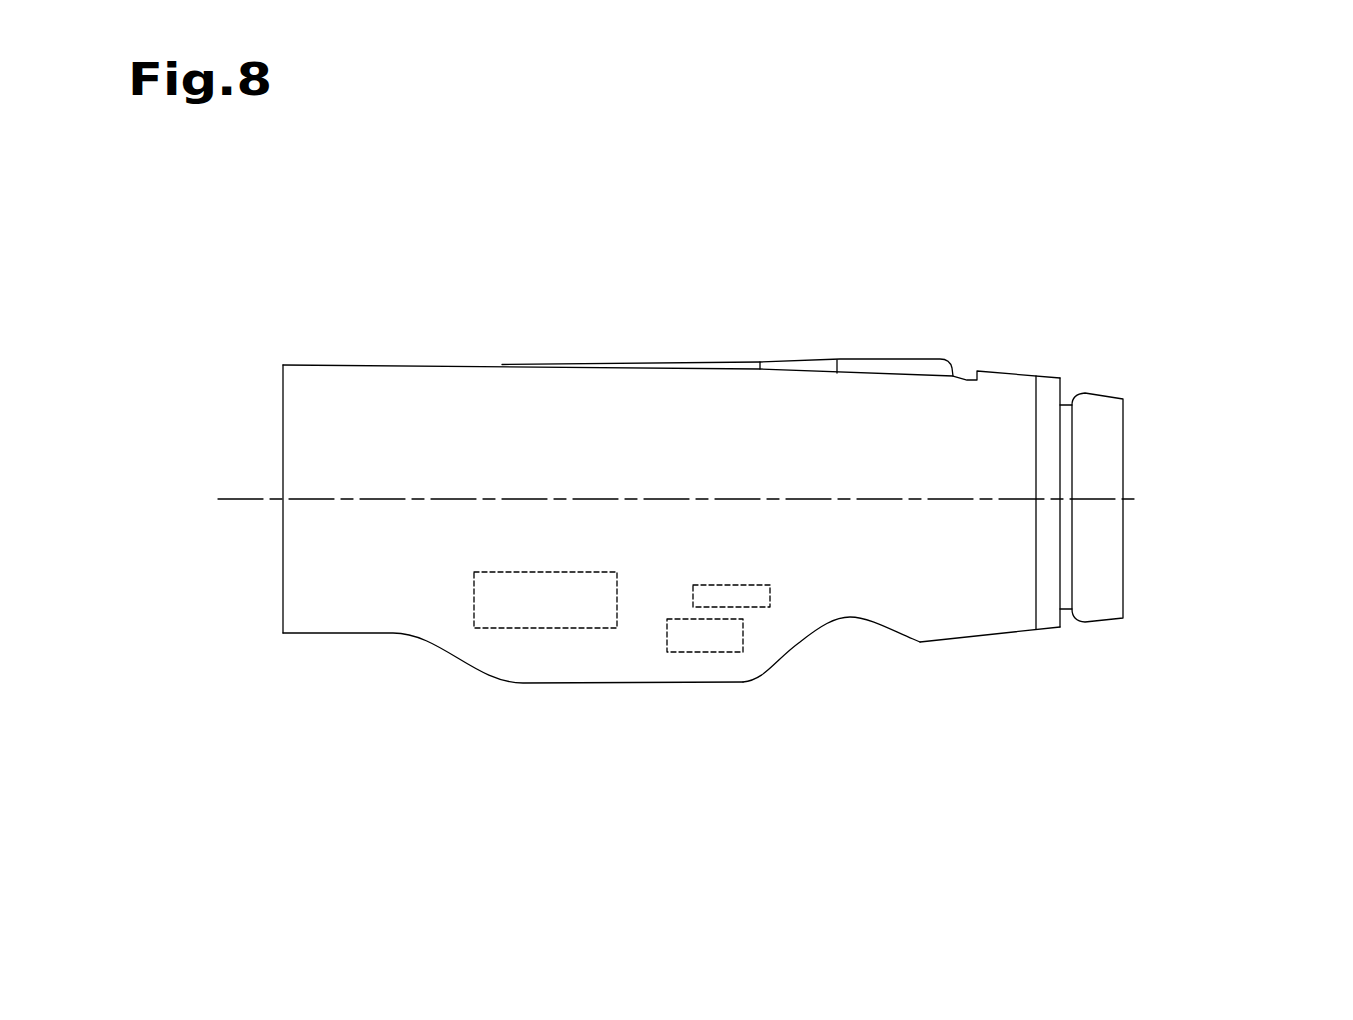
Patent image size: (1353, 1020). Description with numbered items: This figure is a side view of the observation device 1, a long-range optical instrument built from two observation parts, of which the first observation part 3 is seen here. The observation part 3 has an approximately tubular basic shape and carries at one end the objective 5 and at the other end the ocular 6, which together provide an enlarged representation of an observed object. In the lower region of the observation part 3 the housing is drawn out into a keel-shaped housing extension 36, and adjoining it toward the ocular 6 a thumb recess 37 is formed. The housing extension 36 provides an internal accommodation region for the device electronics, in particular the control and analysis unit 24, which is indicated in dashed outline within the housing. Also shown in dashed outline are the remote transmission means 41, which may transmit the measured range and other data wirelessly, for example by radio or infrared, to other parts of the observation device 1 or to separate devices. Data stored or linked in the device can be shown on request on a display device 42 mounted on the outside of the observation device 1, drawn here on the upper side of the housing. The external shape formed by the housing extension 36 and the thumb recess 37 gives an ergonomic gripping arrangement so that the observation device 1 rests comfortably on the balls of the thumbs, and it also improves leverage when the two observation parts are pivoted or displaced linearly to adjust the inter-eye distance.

The observation device 1 is at (303, 290).
The first observation part 3 is at (355, 688).
The objective 5 is at (263, 462).
The ocular 6 is at (1145, 558).
The control and analysis unit 24 is at (557, 645).
The housing extension 36 is at (712, 702).
The thumb recess 37 is at (872, 635).
The remote transmission means 41 is at (762, 625).
The display device 42 is at (802, 367).